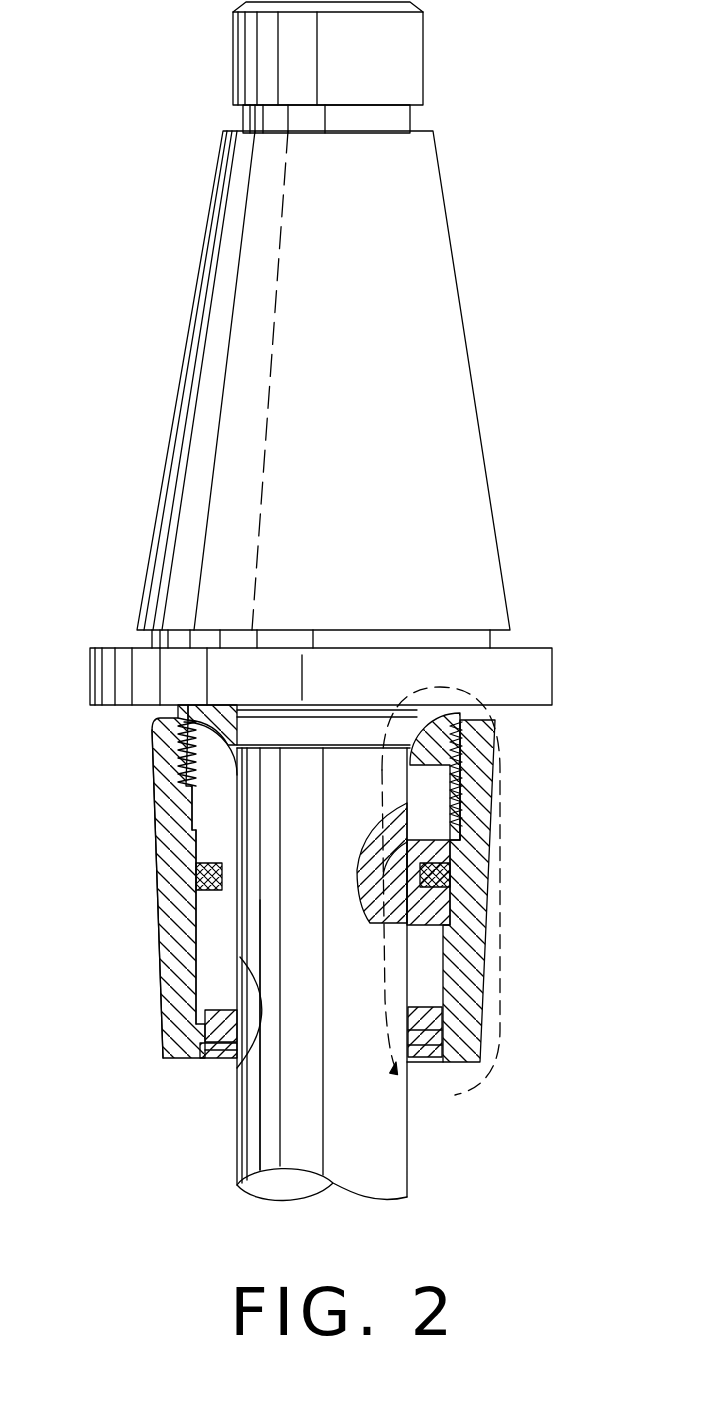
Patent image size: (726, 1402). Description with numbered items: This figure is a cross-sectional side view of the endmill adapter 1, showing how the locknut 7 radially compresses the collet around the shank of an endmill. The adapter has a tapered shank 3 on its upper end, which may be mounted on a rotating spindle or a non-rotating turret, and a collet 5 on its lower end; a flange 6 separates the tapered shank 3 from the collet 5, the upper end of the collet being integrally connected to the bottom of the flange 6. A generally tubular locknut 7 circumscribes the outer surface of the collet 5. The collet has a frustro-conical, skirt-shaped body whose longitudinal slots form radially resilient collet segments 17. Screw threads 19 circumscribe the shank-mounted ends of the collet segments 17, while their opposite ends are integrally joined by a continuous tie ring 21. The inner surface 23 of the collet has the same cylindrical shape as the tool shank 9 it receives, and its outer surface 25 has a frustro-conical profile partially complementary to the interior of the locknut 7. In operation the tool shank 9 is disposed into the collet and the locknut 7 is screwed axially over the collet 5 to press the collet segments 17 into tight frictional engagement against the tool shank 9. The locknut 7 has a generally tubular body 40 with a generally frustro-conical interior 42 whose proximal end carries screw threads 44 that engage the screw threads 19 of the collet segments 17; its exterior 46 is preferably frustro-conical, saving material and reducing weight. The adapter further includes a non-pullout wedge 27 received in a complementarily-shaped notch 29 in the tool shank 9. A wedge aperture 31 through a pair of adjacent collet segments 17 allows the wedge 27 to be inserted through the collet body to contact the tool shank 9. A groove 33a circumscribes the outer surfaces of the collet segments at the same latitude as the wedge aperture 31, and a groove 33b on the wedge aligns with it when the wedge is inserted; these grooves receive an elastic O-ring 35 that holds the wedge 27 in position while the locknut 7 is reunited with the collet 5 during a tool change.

The endmill adapter 1 is at (93, 597).
The tapered shank 3 is at (435, 362).
The collet 5 is at (432, 1083).
The flange 6 is at (532, 678).
The locknut 7 is at (496, 941).
The tool shank 9 is at (267, 1138).
The collet segments 17 is at (155, 800).
The screw threads 19 is at (410, 775).
The tie ring 21 is at (207, 1058).
The inner surface 23 is at (237, 1068).
The outer surface 25 is at (193, 946).
The non-pullout wedge 27 is at (440, 852).
The notch 29 is at (368, 923).
The wedge aperture 31 is at (445, 960).
The groove 33a is at (162, 923).
The groove 33b is at (445, 877).
The O-ring 35 is at (200, 876).
The tubular body 40 is at (478, 835).
The interior 42 is at (205, 975).
The screw threads 44 is at (216, 793).
The exterior 46 is at (152, 830).